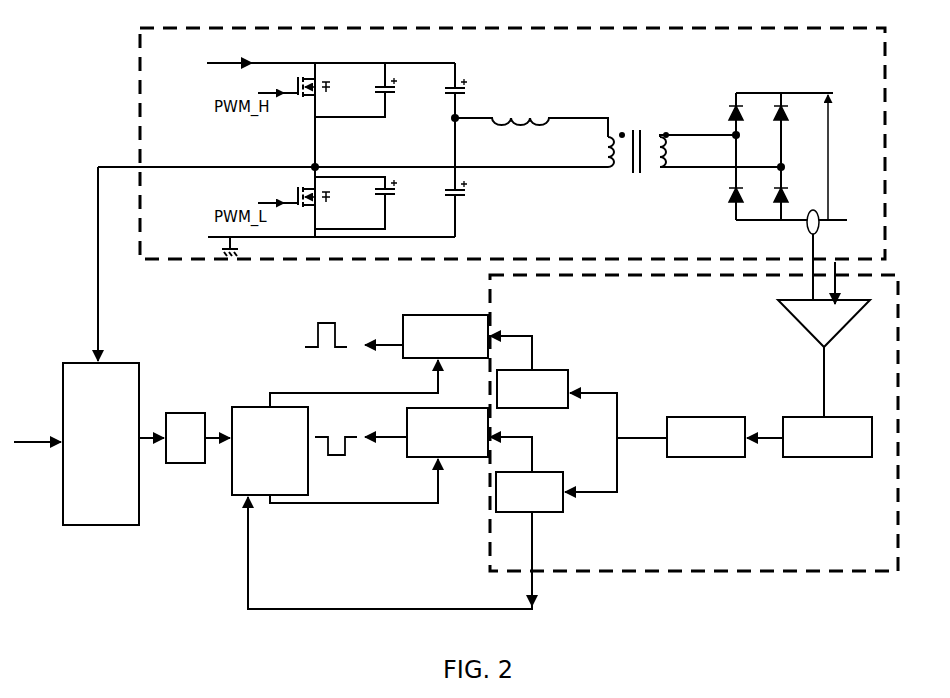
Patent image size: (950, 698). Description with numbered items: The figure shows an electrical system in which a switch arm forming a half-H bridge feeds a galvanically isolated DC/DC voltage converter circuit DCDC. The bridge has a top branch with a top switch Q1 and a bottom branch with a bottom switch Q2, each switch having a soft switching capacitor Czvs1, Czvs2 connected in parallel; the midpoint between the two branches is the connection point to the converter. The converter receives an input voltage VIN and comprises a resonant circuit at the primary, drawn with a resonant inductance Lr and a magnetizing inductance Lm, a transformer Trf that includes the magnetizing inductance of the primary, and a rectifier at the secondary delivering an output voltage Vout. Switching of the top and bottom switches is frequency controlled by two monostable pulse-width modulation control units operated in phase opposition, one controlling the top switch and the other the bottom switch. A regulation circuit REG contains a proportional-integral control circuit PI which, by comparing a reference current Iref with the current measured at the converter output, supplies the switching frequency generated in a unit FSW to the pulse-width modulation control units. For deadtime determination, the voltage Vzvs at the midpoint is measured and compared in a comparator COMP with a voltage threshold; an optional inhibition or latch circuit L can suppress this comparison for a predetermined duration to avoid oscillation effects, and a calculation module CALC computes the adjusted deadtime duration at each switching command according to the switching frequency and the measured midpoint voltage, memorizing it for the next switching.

The DC/DC voltage converter circuit DCDC is at (140, 71).
The regulation circuit REG is at (490, 558).
The top switch Q1 is at (334, 72).
The bottom switch Q2 is at (344, 186).
The soft switching capacitor Czvs1 is at (376, 90).
The soft switching capacitor Czvs2 is at (376, 203).
The resonant inductor Lr is at (531, 131).
The magnetizing inductance Lm is at (599, 149).
The transformer Trf is at (677, 132).
The output voltage Vout is at (851, 157).
The reference current Iref is at (851, 283).
The proportional-integral control circuit PI is at (827, 437).
The switching frequency unit FSW is at (706, 437).
The comparator COMP is at (101, 444).
The inhibition circuit L is at (185, 438).
The calculation module CALC is at (270, 451).
The input voltage VIN is at (317, 65).
The midpoint voltage Vzvs is at (131, 264).